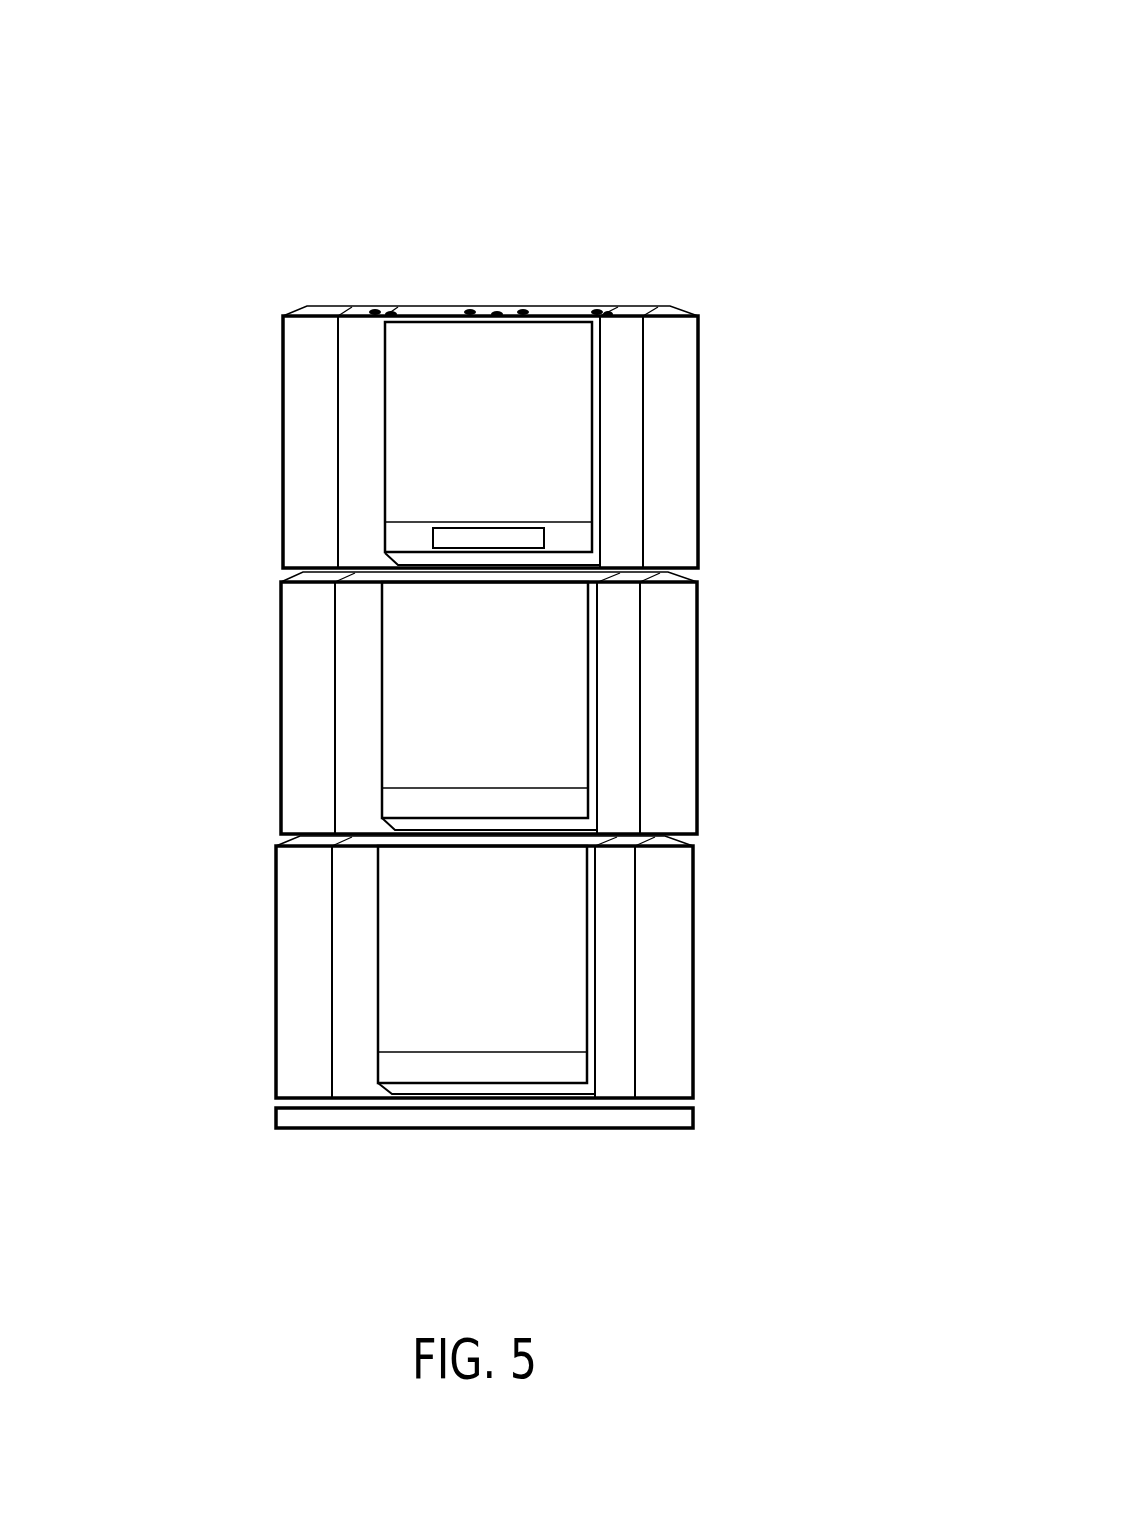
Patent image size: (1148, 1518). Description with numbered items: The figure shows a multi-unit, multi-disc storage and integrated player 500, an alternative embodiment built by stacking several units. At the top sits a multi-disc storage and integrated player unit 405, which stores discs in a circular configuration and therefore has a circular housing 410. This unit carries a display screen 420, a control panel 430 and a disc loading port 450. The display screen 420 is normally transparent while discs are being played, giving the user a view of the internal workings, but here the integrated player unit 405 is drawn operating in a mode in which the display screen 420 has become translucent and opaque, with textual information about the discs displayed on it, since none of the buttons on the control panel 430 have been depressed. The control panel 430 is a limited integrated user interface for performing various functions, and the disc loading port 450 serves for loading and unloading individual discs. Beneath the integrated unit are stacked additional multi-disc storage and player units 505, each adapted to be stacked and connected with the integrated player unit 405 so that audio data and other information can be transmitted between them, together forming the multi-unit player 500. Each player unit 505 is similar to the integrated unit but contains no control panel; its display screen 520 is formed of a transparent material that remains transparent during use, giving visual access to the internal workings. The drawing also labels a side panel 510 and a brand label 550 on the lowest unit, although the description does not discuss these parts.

The multi-unit, multi-disc storage and integrated player 500 is at (708, 170).
The multi-disc storage and integrated player unit 405 is at (310, 462).
The circular housing 410 is at (673, 391).
The display screen 420 is at (570, 450).
The control panel 430 is at (422, 312).
The disc loading port 450 is at (418, 542).
The multi-disc storage and player unit 505 is at (312, 913).
The right side panel of lower unit 510 is at (665, 1003).
The display screen 520 is at (440, 952).
The brand label 550 is at (527, 1070).